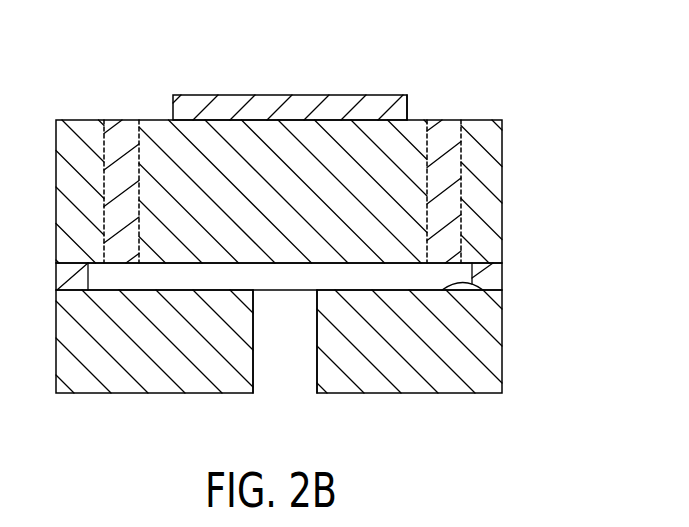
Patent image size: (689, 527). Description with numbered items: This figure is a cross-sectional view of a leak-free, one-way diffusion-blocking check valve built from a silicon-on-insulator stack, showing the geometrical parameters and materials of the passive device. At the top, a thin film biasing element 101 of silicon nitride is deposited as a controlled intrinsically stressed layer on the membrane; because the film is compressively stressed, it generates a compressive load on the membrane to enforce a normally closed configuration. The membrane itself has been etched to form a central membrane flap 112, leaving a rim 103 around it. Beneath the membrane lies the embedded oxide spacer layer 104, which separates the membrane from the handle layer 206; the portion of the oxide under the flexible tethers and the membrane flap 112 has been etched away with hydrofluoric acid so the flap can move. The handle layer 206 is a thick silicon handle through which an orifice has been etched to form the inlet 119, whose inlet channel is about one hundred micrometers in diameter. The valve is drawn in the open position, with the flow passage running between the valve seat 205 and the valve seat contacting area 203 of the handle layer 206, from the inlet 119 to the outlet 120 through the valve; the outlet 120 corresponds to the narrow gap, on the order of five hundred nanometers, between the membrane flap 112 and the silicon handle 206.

The thin film biasing element 101 is at (368, 105).
The rim 103 is at (495, 170).
The embedded oxide spacer layer 104 is at (495, 286).
The membrane flap 112 is at (407, 137).
The inlet 119 is at (288, 387).
The outlet 120 is at (118, 130).
The valve seat contacting area 203 is at (483, 290).
The valve seat 205 is at (288, 265).
The handle layer 206 is at (495, 370).